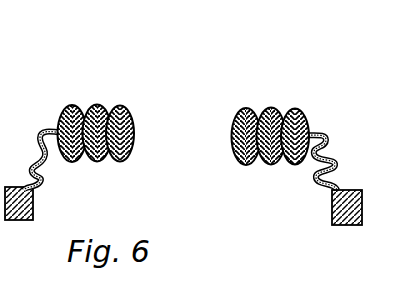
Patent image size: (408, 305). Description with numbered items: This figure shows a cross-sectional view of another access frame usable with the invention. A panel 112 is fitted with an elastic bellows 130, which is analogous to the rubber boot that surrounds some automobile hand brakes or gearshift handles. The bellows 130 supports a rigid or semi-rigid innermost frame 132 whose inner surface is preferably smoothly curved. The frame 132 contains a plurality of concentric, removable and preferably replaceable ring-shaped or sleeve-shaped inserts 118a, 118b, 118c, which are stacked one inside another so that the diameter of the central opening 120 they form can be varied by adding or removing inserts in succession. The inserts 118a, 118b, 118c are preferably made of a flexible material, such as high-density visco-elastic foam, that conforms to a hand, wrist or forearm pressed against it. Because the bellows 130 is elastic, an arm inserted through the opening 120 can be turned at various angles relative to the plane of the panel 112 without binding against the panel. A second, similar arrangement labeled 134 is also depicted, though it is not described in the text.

The insert 118a is at (82, 105).
The insert 118b is at (102, 105).
The insert 118c is at (122, 107).
The central opening 120 is at (113, 97).
The elastic bellows 130 is at (40, 178).
The coil 134 is at (283, 103).
The innermost frame 132 is at (300, 165).
The panel 112 is at (332, 217).